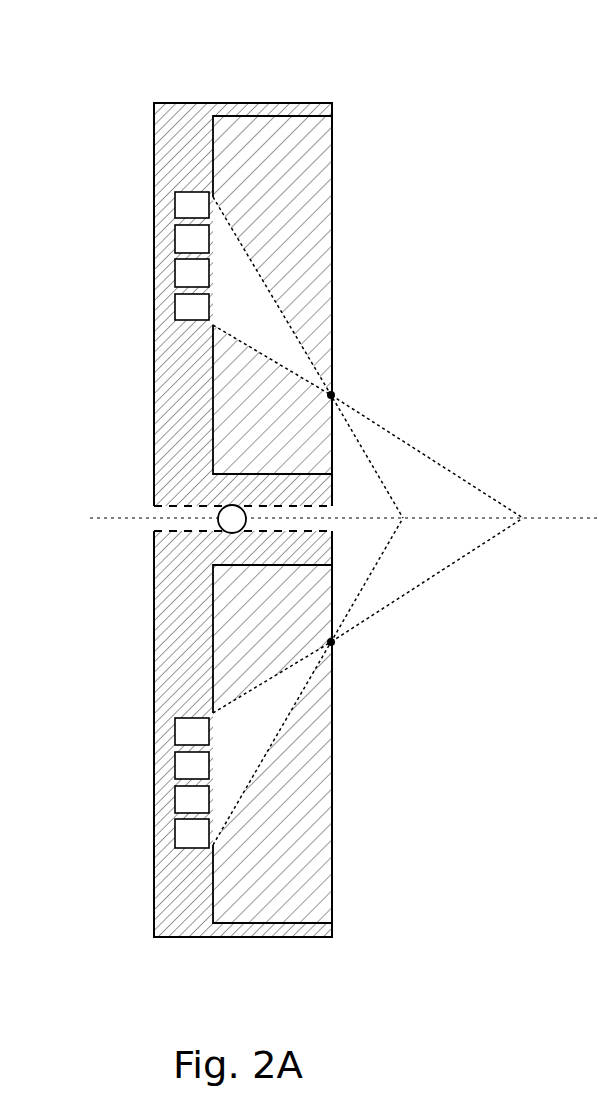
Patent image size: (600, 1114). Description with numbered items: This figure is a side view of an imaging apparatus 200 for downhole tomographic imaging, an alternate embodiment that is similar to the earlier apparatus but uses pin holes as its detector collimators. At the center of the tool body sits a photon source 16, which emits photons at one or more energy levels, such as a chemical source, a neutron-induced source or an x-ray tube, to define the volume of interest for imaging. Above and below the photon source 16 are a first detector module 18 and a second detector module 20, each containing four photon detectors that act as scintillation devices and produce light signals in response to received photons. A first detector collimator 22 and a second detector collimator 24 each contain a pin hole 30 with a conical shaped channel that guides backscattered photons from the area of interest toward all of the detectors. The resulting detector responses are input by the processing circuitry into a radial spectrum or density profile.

The imaging apparatus 200 is at (280, 477).
The first detector collimator 22 is at (273, 297).
The second detector collimator 24 is at (273, 753).
The pin hole 30 is at (331, 395).
The photon source 16 is at (220, 512).
The first detector module 18 is at (95, 183).
The second detector module 20 is at (95, 707).